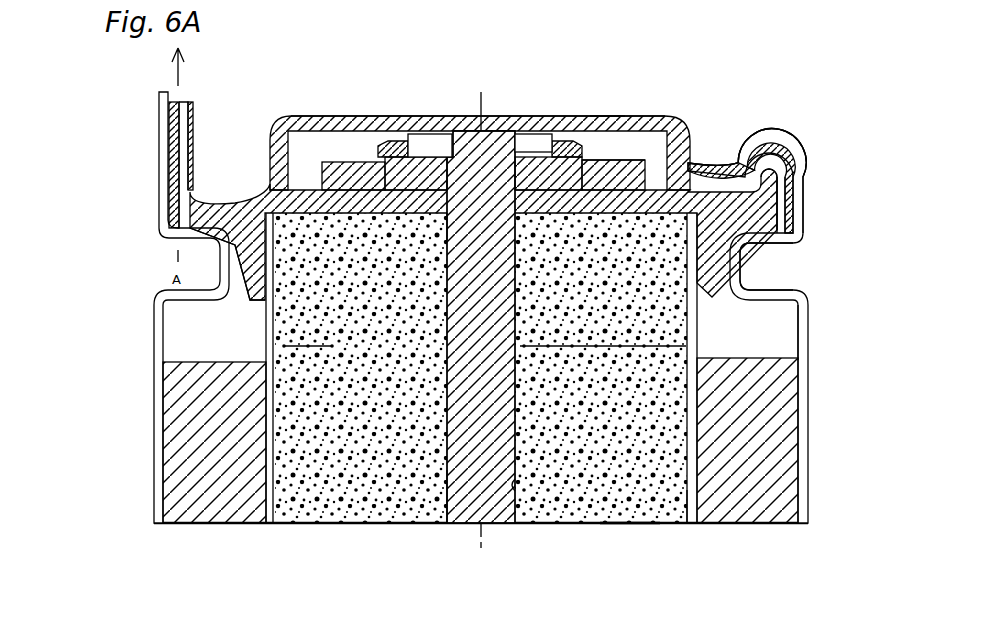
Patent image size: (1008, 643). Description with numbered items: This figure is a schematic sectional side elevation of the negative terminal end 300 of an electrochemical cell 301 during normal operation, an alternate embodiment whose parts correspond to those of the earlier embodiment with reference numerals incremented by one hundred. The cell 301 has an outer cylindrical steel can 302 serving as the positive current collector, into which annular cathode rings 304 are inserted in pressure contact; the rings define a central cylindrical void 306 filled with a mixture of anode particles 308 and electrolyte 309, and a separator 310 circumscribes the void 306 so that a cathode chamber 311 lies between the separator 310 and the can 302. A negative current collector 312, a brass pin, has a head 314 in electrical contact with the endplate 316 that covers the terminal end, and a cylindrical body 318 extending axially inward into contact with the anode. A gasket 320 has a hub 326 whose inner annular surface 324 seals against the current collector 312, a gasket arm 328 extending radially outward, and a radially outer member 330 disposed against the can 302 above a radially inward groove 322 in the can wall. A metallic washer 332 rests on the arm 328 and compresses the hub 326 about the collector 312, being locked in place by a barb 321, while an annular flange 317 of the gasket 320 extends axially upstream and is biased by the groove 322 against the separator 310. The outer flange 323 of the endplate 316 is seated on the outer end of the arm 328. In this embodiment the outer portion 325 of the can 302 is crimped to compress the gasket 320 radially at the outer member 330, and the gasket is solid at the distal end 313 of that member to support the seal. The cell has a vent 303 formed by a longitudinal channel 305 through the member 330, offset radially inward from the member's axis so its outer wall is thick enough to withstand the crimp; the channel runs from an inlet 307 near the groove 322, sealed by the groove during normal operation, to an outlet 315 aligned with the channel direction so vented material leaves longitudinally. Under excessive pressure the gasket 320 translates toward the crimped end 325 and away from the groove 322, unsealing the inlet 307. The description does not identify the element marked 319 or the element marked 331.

The negative terminal end 300 is at (318, 118).
The electrochemical cell 301 is at (762, 101).
The can 302 is at (808, 381).
The vent 303 is at (781, 151).
The cathode ring 304 is at (808, 436).
The channel 305 is at (787, 186).
The void 306 is at (601, 368).
The inlet 307 is at (790, 241).
The anode particles 308 is at (668, 516).
The electrolyte 309 is at (637, 518).
The separator 310 is at (697, 311).
The cathode chamber 311 is at (784, 334).
The negative current collector 312 is at (446, 474).
The distal end 313 is at (794, 161).
The head 314 is at (561, 116).
The outlet 315 is at (698, 167).
The endplate 316 is at (400, 115).
The flange 317 is at (242, 288).
The cylindrical body 318 is at (519, 490).
The spacer block 319 is at (358, 156).
The gasket 320 is at (291, 190).
The barb 321 is at (601, 114).
The groove 322 is at (738, 268).
The outer flange 323 is at (228, 180).
The inner annular surface 324 is at (447, 187).
The outer portion 325 is at (737, 164).
The hub 326 is at (480, 227).
The gasket arm 328 is at (447, 243).
The radially outer member 330 is at (159, 172).
The tab insulator 331 is at (164, 137).
The washer 332 is at (645, 152).